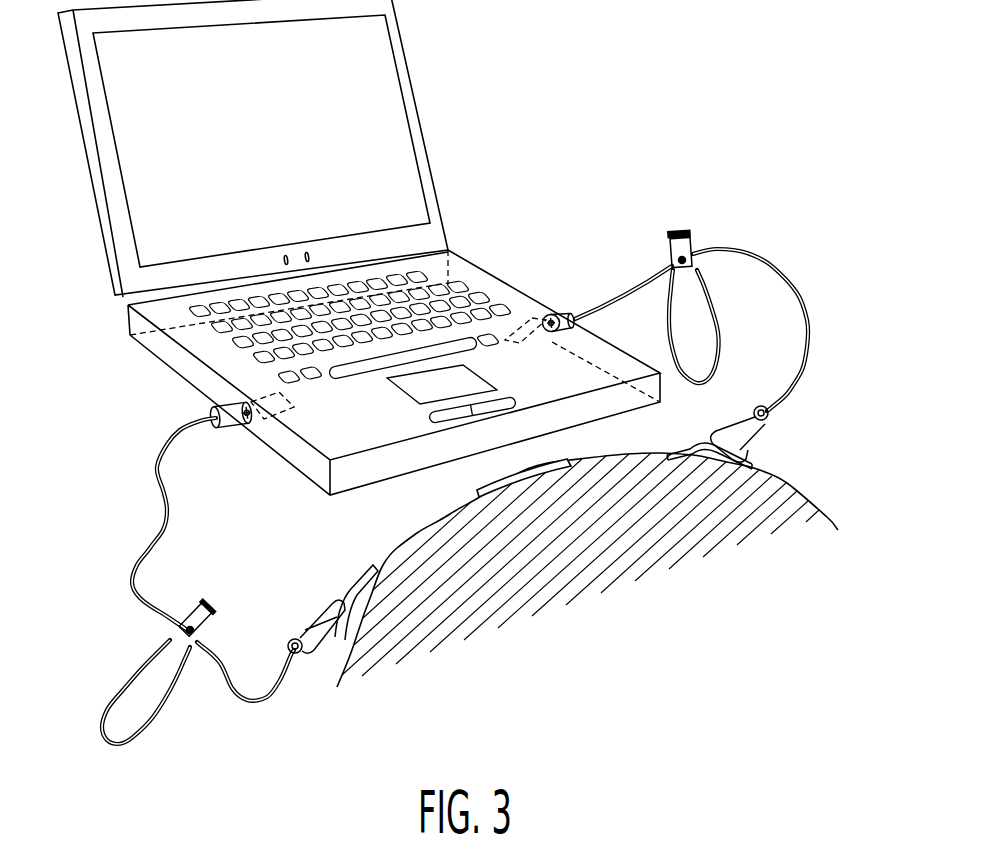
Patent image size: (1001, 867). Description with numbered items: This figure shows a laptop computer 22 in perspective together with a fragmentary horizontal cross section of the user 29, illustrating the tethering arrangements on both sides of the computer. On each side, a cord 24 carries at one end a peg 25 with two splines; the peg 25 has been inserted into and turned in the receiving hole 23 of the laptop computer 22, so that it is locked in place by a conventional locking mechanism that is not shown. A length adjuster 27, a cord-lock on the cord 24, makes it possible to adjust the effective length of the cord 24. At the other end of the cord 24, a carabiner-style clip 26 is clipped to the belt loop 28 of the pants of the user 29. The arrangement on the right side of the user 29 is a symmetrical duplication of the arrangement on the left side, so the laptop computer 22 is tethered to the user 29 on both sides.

The laptop computer 22 is at (377, 485).
The receiving hole 23 is at (233, 404).
The cord 24 is at (777, 267).
The peg 25 is at (226, 428).
The carabiner-style clip 26 is at (755, 440).
The length adjuster 27 is at (694, 242).
The belt loop 28 is at (690, 448).
The user 29 is at (581, 594).